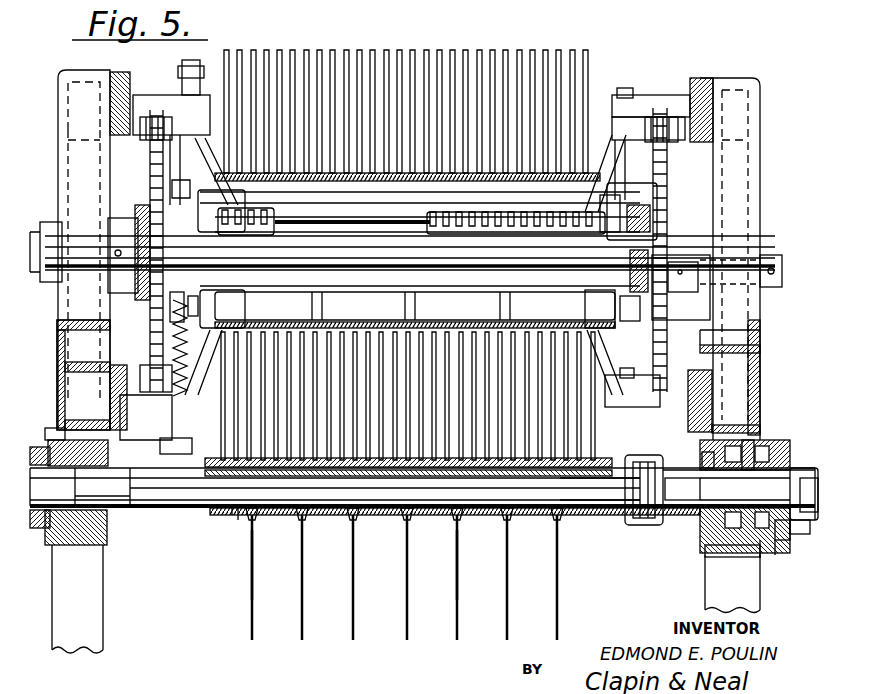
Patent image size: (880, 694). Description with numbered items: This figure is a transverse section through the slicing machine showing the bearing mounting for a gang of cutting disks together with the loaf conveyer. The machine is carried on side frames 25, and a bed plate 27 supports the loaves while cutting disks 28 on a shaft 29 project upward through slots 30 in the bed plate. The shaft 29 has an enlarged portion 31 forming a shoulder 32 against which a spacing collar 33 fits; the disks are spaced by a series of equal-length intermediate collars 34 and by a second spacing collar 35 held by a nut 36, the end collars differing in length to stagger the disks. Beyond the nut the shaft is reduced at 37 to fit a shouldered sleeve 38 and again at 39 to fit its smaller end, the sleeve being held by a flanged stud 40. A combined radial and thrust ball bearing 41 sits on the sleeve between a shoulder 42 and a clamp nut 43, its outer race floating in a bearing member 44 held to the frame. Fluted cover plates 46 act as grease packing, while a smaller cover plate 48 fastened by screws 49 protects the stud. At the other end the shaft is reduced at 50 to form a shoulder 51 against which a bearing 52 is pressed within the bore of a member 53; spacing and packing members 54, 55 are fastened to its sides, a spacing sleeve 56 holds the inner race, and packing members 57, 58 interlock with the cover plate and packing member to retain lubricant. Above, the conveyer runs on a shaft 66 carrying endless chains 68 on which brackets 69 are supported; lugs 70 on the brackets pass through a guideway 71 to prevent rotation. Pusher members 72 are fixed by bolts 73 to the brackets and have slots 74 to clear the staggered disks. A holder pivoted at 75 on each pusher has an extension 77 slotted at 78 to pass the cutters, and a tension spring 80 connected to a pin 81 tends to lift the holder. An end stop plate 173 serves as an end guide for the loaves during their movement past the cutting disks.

The side frames 25 is at (84, 640).
The bed plate 27 is at (210, 508).
The cutting disks 28 is at (252, 635).
The shaft 29 is at (604, 500).
The slots 30 is at (212, 454).
The enlarged portion 31 is at (160, 510).
The shoulder 32 is at (232, 512).
The spacing collar 33 is at (238, 522).
The intermediate collars 34 is at (262, 520).
The second spacing collar 35 is at (598, 498).
The nut 36 is at (640, 470).
The reduced portion 37 is at (672, 510).
The shouldered sleeve 38 is at (700, 500).
The reduced portion 39 is at (757, 488).
The flanged nut or stud 40 is at (812, 470).
The combined radial and thrust ball bearing 41 is at (765, 445).
The shoulder 42 is at (722, 557).
The clamp nut 43 is at (768, 556).
The bearing member 44 is at (745, 432).
The cover plates 46 is at (718, 548).
The smaller cover plate 48 is at (806, 534).
The screws 49 is at (786, 540).
The reduced portion 50 is at (57, 487).
The shoulder 51 is at (76, 490).
The combined radial and thrust bearing 52 is at (68, 545).
The member 53 is at (78, 430).
The spacing and packing member 54 is at (48, 430).
The spacing and packing member 55 is at (138, 418).
The spacing sleeve 56 is at (46, 452).
The packing member 57 is at (705, 452).
The packing member 58 is at (128, 448).
The shaft 66 is at (406, 266).
The endless chains 68 is at (160, 112).
The brackets 69 is at (648, 100).
The lugs 70 is at (705, 106).
The guideway 71 is at (700, 80).
The pusher members 72 is at (506, 50).
The bolts 73 is at (620, 90).
The slots 74 is at (582, 50).
The pivot 75 is at (628, 200).
The extension 77 is at (470, 215).
The slots 78 is at (448, 212).
The tension spring 80 is at (150, 343).
The pin 81 is at (165, 496).
The end stop plate 173 is at (385, 518).